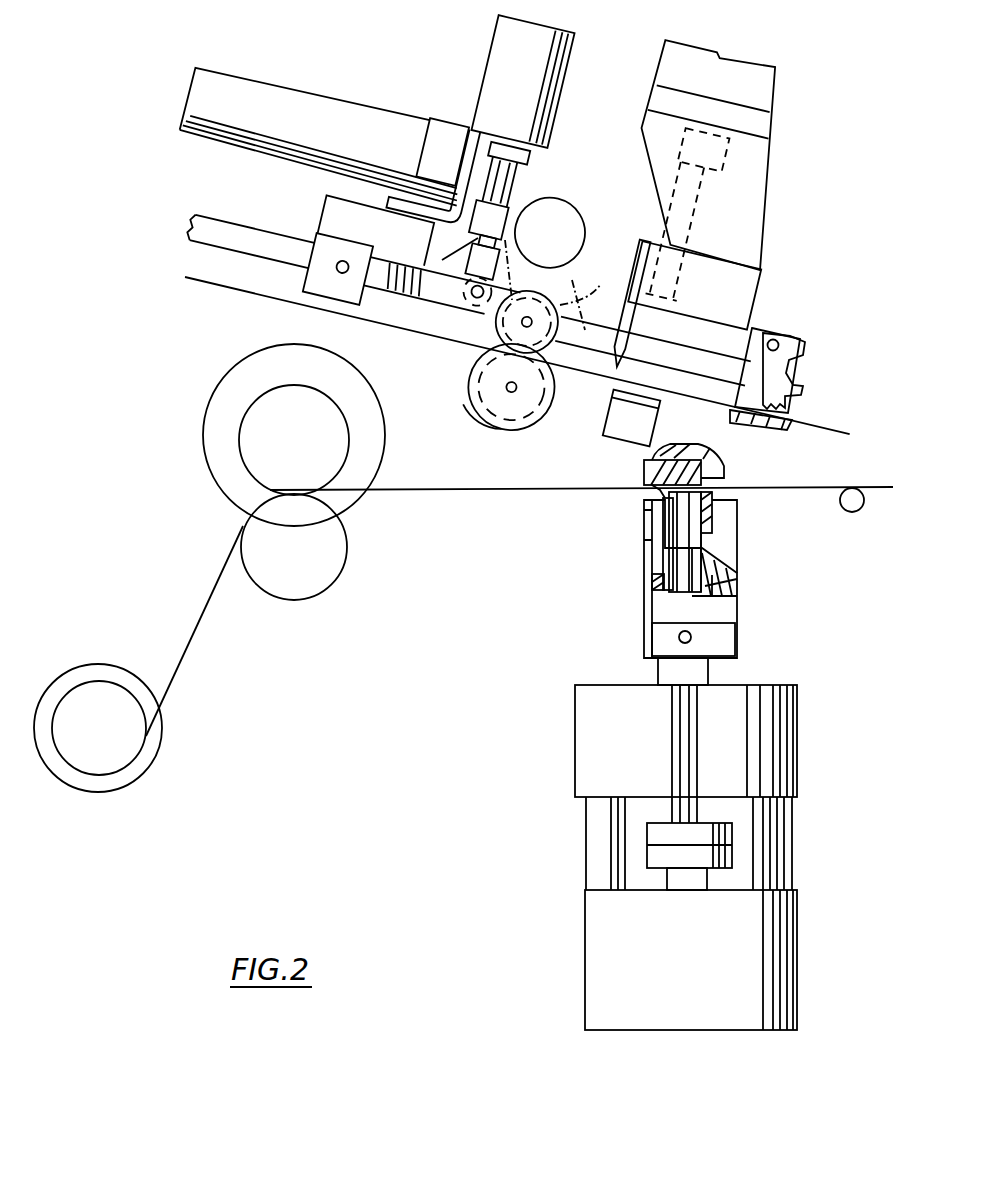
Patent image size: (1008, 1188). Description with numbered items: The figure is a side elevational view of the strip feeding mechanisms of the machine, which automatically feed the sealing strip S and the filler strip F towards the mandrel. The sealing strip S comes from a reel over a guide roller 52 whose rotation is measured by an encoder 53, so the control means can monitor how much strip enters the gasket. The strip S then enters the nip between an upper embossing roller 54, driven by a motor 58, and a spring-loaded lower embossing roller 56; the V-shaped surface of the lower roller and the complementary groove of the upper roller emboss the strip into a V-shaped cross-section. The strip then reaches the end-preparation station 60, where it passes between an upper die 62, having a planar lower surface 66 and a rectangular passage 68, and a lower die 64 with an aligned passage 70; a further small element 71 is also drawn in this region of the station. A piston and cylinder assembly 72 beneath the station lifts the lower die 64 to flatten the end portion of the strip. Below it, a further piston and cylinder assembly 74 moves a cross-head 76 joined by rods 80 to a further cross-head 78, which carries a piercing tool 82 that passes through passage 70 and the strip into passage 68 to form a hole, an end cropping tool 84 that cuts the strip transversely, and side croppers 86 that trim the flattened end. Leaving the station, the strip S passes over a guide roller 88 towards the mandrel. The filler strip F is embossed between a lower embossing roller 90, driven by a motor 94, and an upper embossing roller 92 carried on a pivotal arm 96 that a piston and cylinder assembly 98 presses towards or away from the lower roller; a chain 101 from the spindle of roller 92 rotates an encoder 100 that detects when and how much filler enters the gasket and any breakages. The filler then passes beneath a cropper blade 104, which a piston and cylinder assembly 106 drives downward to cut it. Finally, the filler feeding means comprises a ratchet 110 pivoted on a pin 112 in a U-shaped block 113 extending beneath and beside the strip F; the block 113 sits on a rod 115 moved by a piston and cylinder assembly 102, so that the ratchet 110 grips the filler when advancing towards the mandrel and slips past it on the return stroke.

The guide roller 52 is at (120, 748).
The encoder 53 is at (110, 776).
The upper embossing roller 54 is at (333, 438).
The lower embossing roller 56 is at (324, 580).
The motor 58 is at (222, 372).
The end-preparation station 60 is at (704, 514).
The upper die 62 is at (636, 464).
The lower die 64 is at (705, 509).
The planar lower surface 66 is at (647, 482).
The rectangular passage 68 is at (709, 442).
The passage 70 is at (662, 514).
The spring 71 is at (640, 570).
The piston and cylinder assembly 72 is at (600, 767).
The further piston and cylinder assembly 74 is at (597, 920).
The cross-head 76 is at (650, 827).
The further cross-head 78 is at (732, 632).
The rods 80 is at (667, 722).
The piercing tool 82 is at (695, 535).
The end cropping tool 84 is at (708, 489).
The side croppers 86 is at (640, 508).
The guide roller 88 is at (850, 503).
The lower embossing roller 90 is at (549, 409).
The upper embossing roller 92 is at (460, 335).
The motor 94 is at (500, 422).
The pivotal arm 96 is at (420, 289).
The piston and cylinder assembly 98 is at (497, 67).
The encoder 100 is at (552, 204).
The chain 101 is at (593, 279).
The piston and cylinder assembly 102 is at (275, 84).
The cropper blade 104 is at (632, 237).
The piston and cylinder assembly 106 is at (737, 64).
The ratchet 110 is at (782, 382).
The pin 112 is at (770, 334).
The block 113 is at (754, 320).
The rod 115 is at (254, 229).
The filler strip F is at (182, 289).
The sealing strip S is at (400, 482).